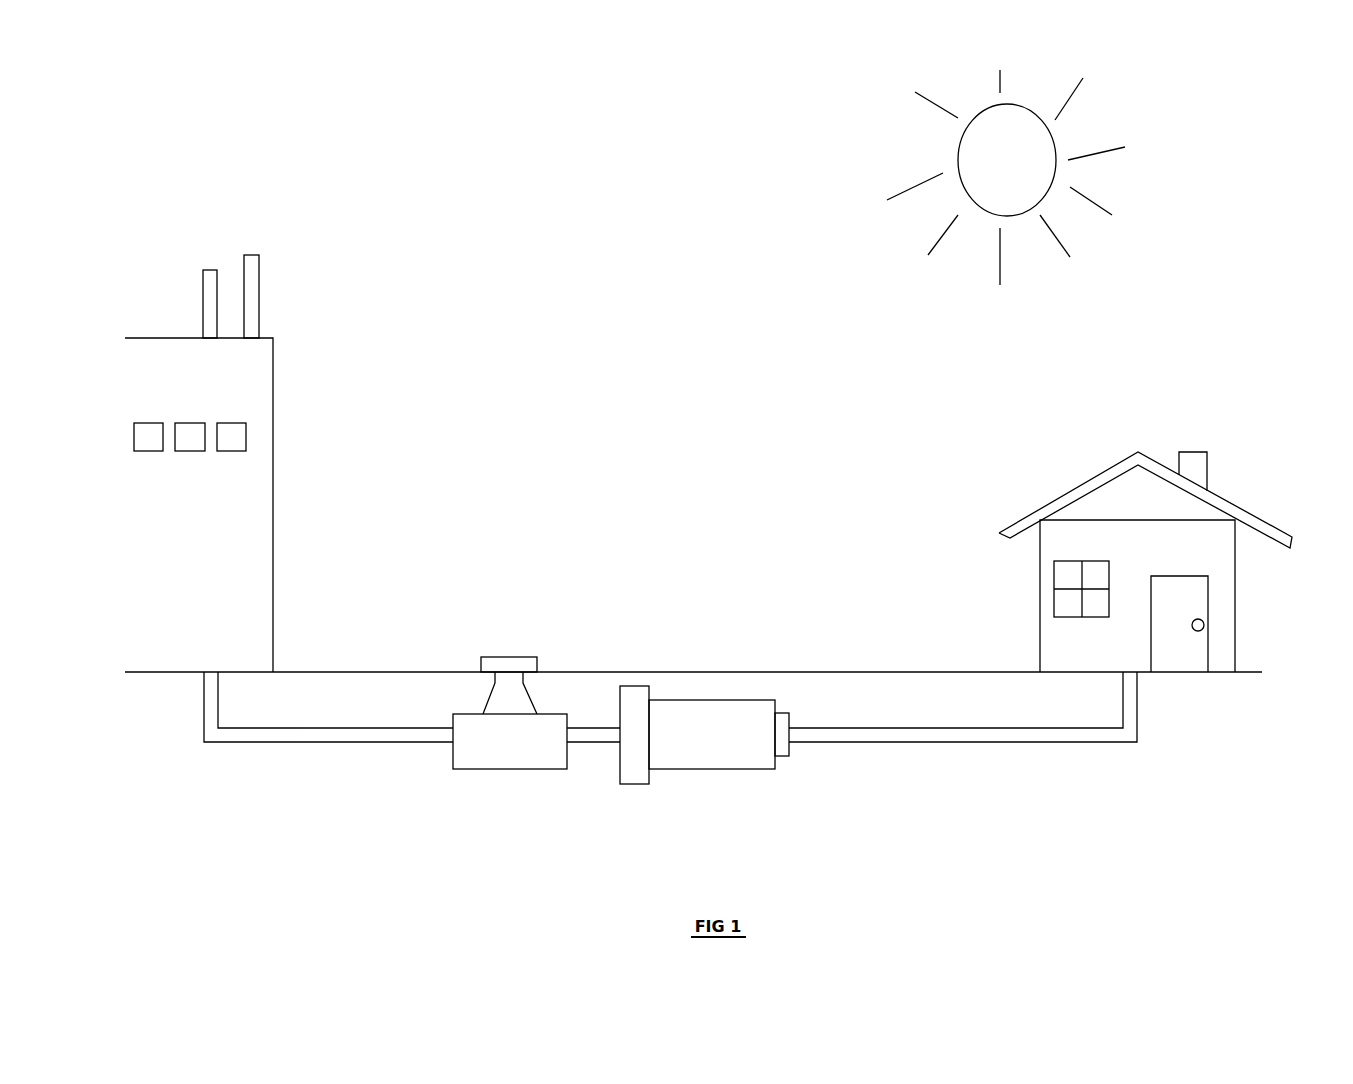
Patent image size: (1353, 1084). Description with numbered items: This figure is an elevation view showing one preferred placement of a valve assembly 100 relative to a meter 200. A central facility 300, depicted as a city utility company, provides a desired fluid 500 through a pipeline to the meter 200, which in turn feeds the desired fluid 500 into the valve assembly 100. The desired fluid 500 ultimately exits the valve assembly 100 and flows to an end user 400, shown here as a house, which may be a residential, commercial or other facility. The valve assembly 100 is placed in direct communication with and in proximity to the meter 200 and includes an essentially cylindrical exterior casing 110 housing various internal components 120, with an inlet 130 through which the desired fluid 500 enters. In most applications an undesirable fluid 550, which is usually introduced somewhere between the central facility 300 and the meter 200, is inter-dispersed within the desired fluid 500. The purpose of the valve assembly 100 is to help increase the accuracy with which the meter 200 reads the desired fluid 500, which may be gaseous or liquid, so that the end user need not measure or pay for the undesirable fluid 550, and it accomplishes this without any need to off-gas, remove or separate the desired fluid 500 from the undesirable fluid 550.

The valve assembly 100 is at (726, 776).
The exterior casing 110 is at (691, 756).
The internal components 120 is at (636, 754).
The inlet 130 is at (789, 745).
The meter 200 is at (510, 713).
The central facility 300 is at (199, 463).
The end user 400 is at (1145, 562).
The desired fluid 500 is at (311, 769).
The undesirable fluid 550 is at (383, 743).